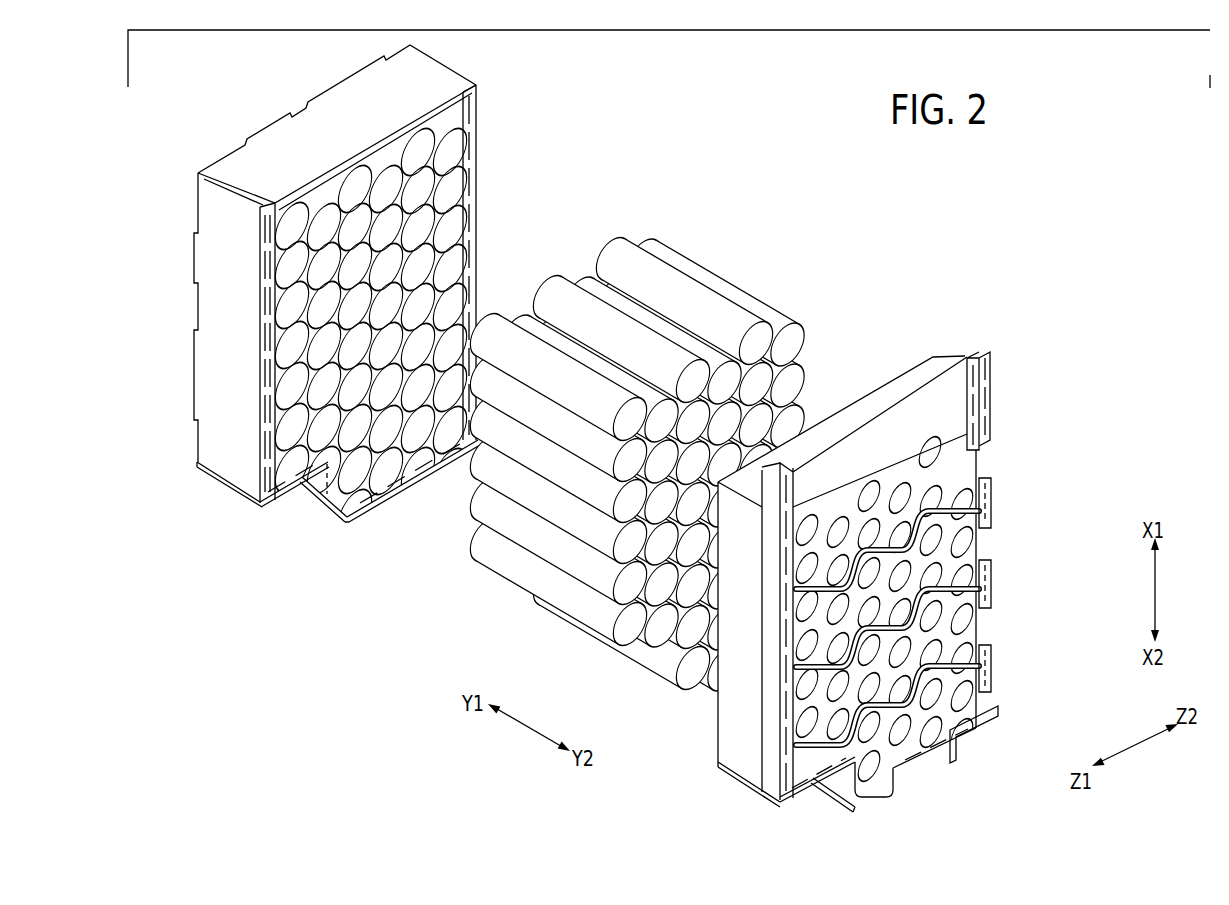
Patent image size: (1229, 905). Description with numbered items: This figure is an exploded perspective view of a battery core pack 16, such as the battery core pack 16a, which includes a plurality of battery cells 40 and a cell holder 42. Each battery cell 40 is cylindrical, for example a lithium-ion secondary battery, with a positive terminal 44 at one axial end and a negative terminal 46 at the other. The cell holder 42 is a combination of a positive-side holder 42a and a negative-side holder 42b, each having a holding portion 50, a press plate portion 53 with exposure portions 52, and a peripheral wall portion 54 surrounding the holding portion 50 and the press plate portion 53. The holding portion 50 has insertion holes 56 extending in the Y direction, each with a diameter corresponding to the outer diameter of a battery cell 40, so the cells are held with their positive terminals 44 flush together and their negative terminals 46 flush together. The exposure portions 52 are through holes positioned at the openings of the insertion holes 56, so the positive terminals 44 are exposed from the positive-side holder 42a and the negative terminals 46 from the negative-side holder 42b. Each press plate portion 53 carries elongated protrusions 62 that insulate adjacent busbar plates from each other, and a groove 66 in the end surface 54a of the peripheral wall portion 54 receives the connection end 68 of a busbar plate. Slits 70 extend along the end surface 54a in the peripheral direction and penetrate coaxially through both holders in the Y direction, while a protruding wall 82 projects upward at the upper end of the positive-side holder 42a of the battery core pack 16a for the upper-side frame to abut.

The battery core pack 16 is at (1082, 185).
The battery core pack 16a is at (1042, 185).
The battery cell 40 is at (647, 284).
The cell holder 42 is at (590, 432).
The positive-side holder 42a is at (938, 358).
The negative-side holder 42b is at (452, 75).
The positive terminal 44 is at (752, 348).
The negative terminal 46 is at (590, 253).
The holding portion 50 is at (385, 470).
The exposure portion 52 is at (323, 100).
The press plate portion 53 is at (976, 545).
The peripheral wall portion 54 is at (221, 447).
The end surface 54a is at (265, 473).
The insertion hole 56 is at (452, 152).
The elongated protrusion 62 is at (942, 668).
The groove 66 is at (947, 763).
The connection end 68 is at (913, 770).
The slit 70 is at (465, 211).
The protruding wall 82 is at (879, 414).